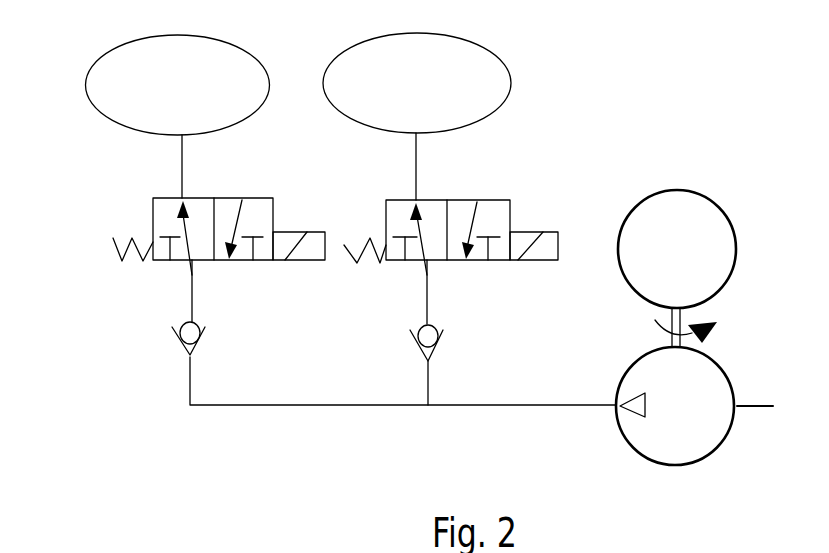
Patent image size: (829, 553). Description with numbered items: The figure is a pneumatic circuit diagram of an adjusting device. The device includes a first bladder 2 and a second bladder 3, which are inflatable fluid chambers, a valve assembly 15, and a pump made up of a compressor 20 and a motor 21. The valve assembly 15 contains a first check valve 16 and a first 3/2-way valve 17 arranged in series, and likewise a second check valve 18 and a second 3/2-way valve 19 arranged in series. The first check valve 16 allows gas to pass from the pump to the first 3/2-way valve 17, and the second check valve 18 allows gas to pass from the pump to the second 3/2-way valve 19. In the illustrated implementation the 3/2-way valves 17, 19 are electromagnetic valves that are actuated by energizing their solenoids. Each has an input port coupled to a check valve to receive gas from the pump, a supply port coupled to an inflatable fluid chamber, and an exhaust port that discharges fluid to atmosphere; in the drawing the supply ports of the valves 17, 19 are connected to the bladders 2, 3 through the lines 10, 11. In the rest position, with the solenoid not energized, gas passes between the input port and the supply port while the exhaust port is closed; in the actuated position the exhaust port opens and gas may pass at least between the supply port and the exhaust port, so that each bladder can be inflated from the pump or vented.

The first bladder 2 is at (82, 88).
The second bladder 3 is at (507, 92).
The first line 10 is at (182, 160).
The second line 11 is at (416, 163).
The valve assembly 15 is at (52, 241).
The first check valve 16 is at (164, 325).
The first 3/2-way valve 17 is at (150, 206).
The second check valve 18 is at (404, 335).
The second 3/2-way valve 19 is at (385, 212).
The compressor 20 is at (723, 368).
The motor 21 is at (717, 207).